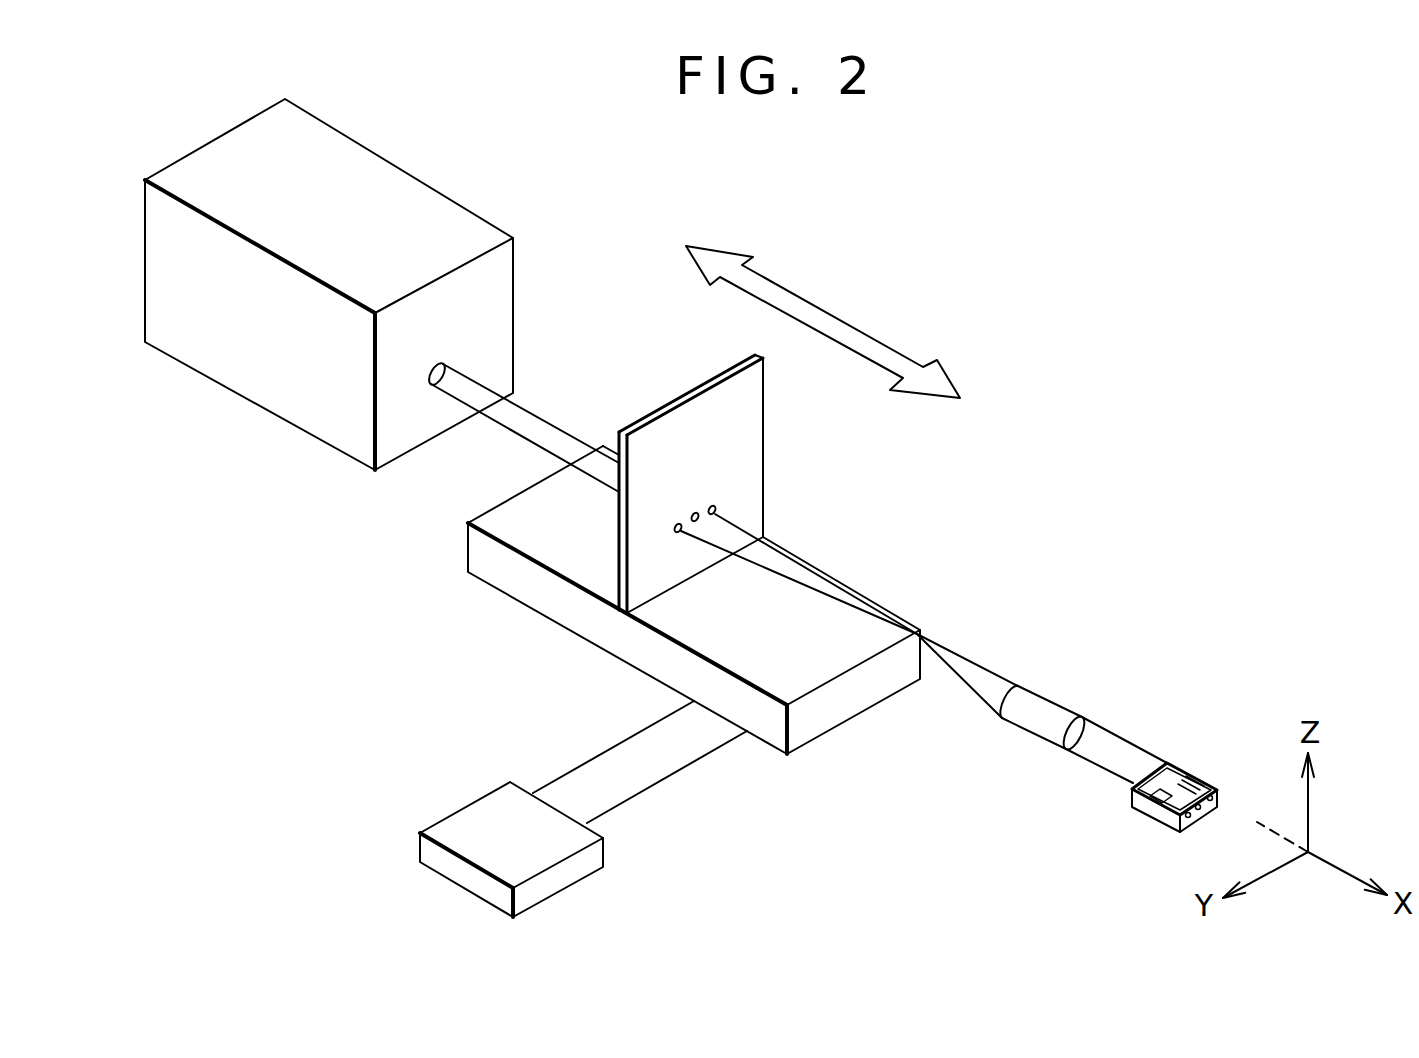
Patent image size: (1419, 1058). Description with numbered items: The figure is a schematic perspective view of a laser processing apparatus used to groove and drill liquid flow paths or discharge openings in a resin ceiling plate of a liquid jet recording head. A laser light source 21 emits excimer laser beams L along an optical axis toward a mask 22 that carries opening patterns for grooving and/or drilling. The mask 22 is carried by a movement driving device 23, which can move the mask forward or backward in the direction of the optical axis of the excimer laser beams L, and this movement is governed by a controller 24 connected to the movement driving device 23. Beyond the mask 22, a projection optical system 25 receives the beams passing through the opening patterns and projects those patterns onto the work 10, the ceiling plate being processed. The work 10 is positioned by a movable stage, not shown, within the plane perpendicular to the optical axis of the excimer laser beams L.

The work 10 is at (1200, 730).
The laser light source 21 is at (395, 188).
The mask 22 is at (738, 443).
The movement driving device 23 is at (815, 720).
The controller 24 is at (560, 877).
The projection optical system 25 is at (1037, 718).
The excimer laser beams L is at (523, 408).